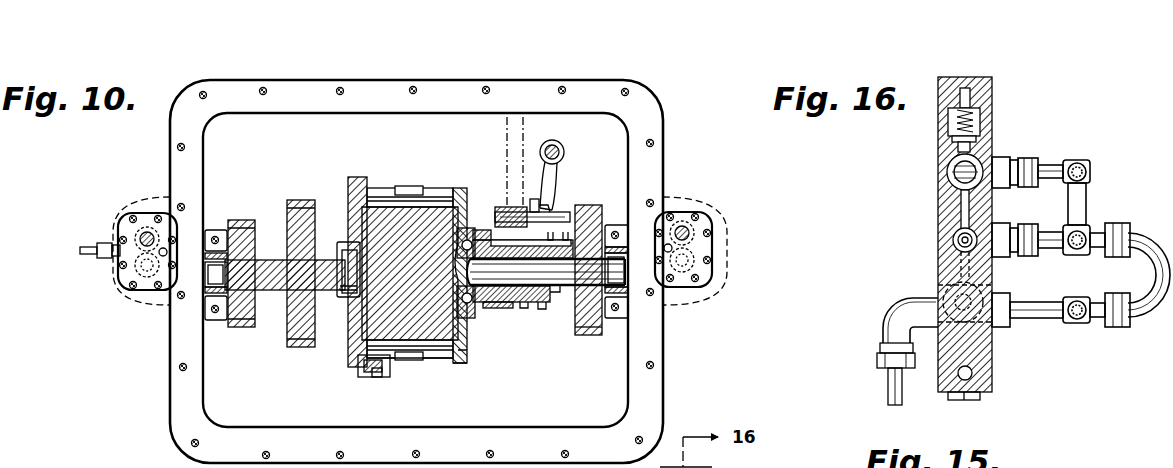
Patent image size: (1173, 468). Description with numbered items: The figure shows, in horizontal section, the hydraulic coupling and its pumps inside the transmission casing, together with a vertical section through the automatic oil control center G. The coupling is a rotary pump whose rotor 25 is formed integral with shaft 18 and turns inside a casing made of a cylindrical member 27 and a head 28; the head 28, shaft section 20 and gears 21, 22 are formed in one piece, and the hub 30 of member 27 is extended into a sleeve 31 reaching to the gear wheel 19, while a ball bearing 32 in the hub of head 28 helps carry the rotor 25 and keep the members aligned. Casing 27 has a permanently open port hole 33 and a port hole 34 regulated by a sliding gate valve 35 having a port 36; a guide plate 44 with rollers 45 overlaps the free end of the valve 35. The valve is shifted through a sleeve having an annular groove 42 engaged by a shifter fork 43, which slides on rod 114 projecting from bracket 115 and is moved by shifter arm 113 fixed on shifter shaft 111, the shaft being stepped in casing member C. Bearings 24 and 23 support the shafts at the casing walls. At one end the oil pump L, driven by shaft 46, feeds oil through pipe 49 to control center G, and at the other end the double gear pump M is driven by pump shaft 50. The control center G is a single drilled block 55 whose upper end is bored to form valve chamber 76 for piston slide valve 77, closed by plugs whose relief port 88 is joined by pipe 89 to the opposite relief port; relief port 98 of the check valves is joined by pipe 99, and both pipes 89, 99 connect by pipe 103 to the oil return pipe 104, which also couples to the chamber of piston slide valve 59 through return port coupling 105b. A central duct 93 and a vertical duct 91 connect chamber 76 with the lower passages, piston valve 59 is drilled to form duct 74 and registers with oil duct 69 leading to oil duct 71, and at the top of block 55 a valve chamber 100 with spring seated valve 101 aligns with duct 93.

In FIG. 10, the casing member C is at (655, 349).
In FIG. 10, the oil pump M is at (140, 303).
In FIG. 10, the oil pump L is at (713, 248).
In FIG. 10, the pump shaft 50 is at (147, 231).
In FIG. 10, the shaft 46 is at (686, 231).
In FIG. 10, the bearing 24 is at (209, 256).
In FIG. 10, the shaft section 20 is at (272, 283).
In FIG. 10, the gear 22 is at (242, 328).
In FIG. 10, the gear 21 is at (297, 347).
In FIG. 10, the ball bearing 32 is at (346, 308).
In FIG. 10, the head 28 is at (353, 188).
In FIG. 10, the rotor 25 is at (421, 206).
In FIG. 10, the port hole 33 is at (405, 187).
In FIG. 10, the cylindrical member 27 is at (458, 190).
In FIG. 10, the port 36 is at (422, 359).
In FIG. 10, the port hole 34 is at (398, 360).
In FIG. 10, the sliding gate valve 35 is at (458, 361).
In FIG. 10, the guide plate 44 is at (370, 378).
In FIG. 10, the rollers 45 is at (377, 378).
In FIG. 10, the shaft 18 is at (553, 274).
In FIG. 10, the hub 30 is at (508, 310).
In FIG. 10, the sleeve 31 is at (521, 306).
In FIG. 10, the annular groove 42 is at (538, 309).
In FIG. 10, the rod 114 is at (560, 215).
In FIG. 10, the bracket 115 is at (509, 211).
In FIG. 10, the shifter fork 43 is at (546, 206).
In FIG. 10, the shifter arm 113 is at (555, 206).
In FIG. 10, the shifter shaft 111 is at (560, 146).
In FIG. 10, the gear wheel 19 is at (589, 336).
In FIG. 10, the bearing 23 is at (622, 294).
In FIG. 16, the oil duct 69 is at (993, 350).
In FIG. 16, the valve chamber 100 is at (937, 122).
In FIG. 16, the spring seated valve 101 is at (937, 139).
In FIG. 16, the piston slide valve 77 is at (947, 173).
In FIG. 16, the valve chamber 76 is at (952, 184).
In FIG. 16, the duct 93 is at (965, 208).
In FIG. 16, the block 55 is at (937, 250).
In FIG. 16, the duct 91 is at (950, 267).
In FIG. 16, the duct 74 is at (960, 307).
In FIG. 16, the pipe 49 is at (890, 388).
In FIG. 16, the oil duct 71 is at (973, 374).
In FIG. 16, the piston slide valve 59 is at (975, 295).
In FIG. 16, the automatic oil control center G is at (1004, 152).
In FIG. 16, the relief port 88 is at (1046, 164).
In FIG. 16, the pipe 89 is at (1090, 170).
In FIG. 16, the relief port 98 is at (1053, 233).
In FIG. 16, the pipe 99 is at (1082, 236).
In FIG. 16, the pipe 103 is at (1150, 278).
In FIG. 16, the return port coupling 105b is at (1038, 307).
In FIG. 16, the oil return pipe 104 is at (1078, 323).